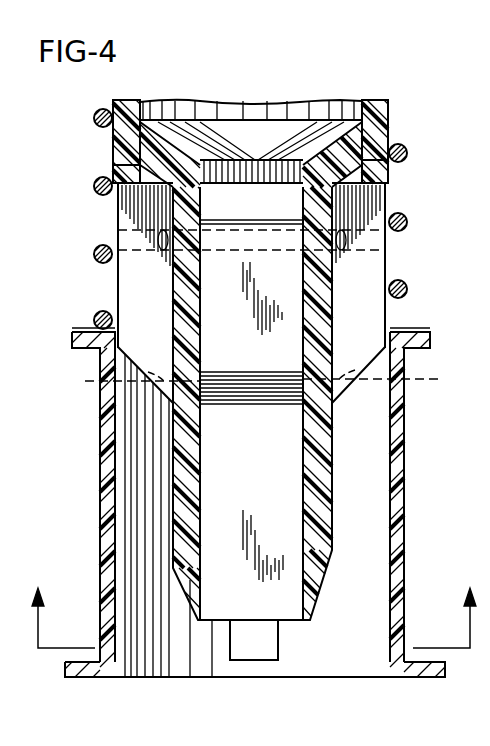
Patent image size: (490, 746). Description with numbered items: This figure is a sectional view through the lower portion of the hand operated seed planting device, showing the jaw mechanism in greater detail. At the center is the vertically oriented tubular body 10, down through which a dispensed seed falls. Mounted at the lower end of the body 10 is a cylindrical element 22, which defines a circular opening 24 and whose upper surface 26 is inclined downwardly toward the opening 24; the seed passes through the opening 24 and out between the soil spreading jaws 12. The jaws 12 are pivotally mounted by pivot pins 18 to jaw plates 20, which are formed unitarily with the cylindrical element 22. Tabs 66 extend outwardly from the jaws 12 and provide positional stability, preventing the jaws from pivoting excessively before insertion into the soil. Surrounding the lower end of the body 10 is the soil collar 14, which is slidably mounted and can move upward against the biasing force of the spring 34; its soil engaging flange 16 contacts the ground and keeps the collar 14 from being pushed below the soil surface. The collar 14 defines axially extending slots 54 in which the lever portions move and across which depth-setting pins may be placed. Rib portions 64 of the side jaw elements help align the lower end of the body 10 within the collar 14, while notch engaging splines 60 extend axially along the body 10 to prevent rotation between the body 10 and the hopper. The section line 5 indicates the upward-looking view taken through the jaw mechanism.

The tubular body 10 is at (378, 115).
The soil spreading jaws 12 is at (212, 541).
The soil collar 14 is at (395, 492).
The soil engaging flange 16 is at (425, 668).
The pivot pins 18 is at (160, 238).
The jaw plates 20 is at (320, 213).
The cylindrical element 22 is at (350, 178).
The circular opening 24 is at (276, 170).
The upper surface 26 is at (318, 158).
The spring 34 is at (407, 291).
The axially extending slots 54 is at (252, 640).
The notch engaging splines 60 is at (185, 473).
The rib portions 64 is at (140, 297).
The tabs 66 is at (257, 382).
The section line 5 is at (254, 633).